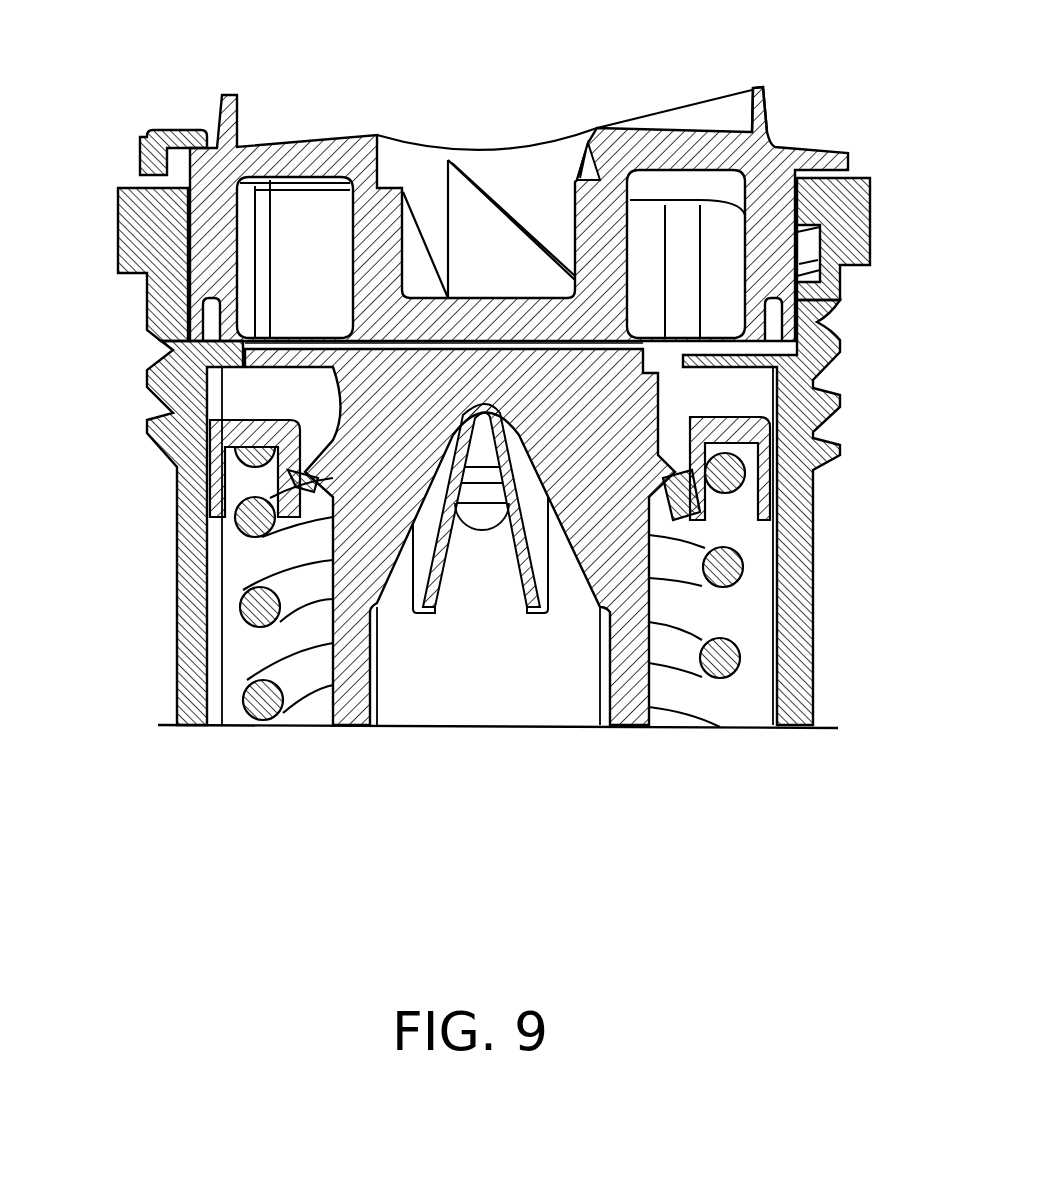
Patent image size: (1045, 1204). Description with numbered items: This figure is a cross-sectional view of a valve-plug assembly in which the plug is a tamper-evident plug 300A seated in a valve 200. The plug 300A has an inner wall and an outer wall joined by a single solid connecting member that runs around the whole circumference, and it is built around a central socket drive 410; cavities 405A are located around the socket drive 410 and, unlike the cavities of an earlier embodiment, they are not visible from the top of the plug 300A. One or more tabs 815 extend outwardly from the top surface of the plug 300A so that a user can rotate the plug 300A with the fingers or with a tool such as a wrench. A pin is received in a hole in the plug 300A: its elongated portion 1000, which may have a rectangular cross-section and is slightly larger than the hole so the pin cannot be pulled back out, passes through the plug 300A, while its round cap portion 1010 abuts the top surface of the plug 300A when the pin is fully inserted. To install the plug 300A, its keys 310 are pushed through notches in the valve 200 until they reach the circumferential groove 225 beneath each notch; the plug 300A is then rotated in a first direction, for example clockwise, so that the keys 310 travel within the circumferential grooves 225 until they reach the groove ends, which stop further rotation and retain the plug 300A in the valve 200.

The valve 200 is at (815, 478).
The circumferential groove 225 is at (798, 285).
The tamper-evident plug 300A is at (818, 148).
The key 310 is at (806, 272).
The cavity 405A is at (260, 295).
The socket drive 410 is at (527, 168).
The tab 815 is at (765, 87).
The elongated portion 1000 is at (163, 242).
The cap portion 1010 is at (152, 130).